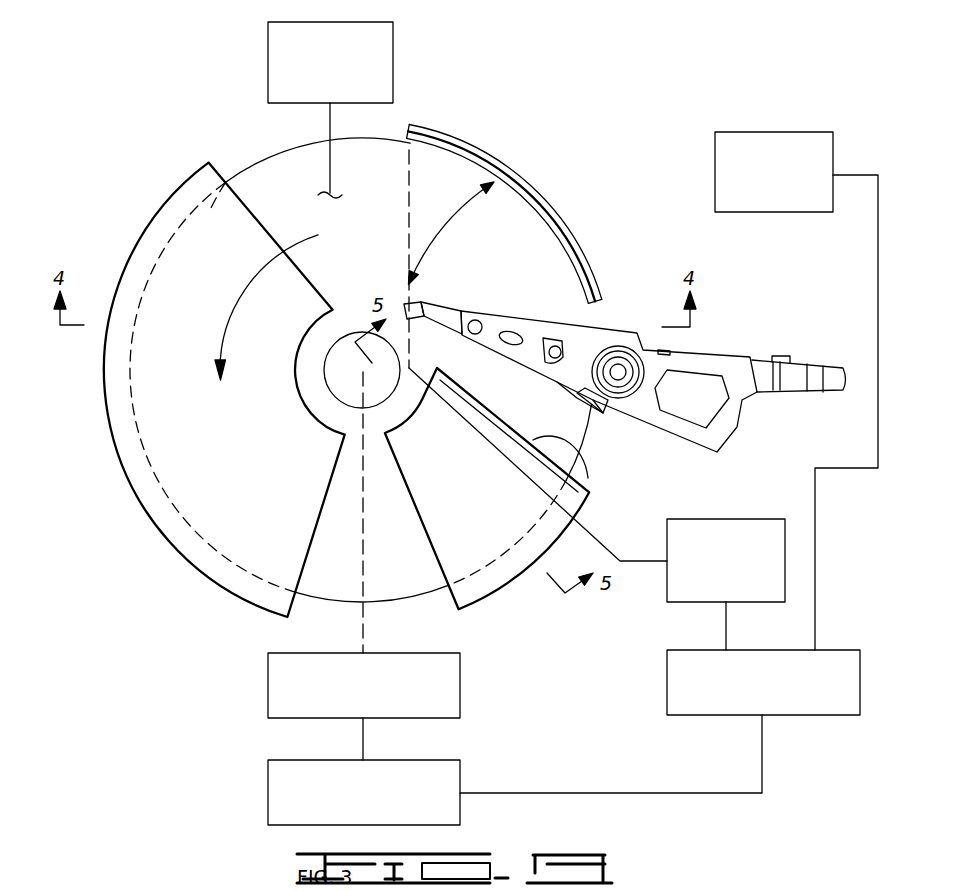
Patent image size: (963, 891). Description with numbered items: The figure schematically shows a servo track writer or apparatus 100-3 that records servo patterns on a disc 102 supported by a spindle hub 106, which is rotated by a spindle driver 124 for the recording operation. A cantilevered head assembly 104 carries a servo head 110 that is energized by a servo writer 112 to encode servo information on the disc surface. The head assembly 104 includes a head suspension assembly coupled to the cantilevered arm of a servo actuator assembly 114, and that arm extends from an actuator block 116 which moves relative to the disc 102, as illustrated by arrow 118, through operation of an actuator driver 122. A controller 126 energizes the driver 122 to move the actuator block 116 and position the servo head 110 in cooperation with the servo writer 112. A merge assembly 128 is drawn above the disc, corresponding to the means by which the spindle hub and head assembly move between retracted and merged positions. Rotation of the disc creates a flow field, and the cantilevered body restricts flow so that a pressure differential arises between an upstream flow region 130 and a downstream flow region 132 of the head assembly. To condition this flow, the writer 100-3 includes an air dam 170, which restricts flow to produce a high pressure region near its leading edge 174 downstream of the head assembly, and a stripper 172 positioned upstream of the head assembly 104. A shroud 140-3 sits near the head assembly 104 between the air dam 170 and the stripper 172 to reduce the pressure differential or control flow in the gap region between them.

The servo track writer 100-3 is at (593, 239).
The disc 102 is at (278, 152).
The cantilevered head assembly 104 is at (487, 313).
The spindle hub 106 is at (268, 682).
The servo head 110 is at (407, 306).
The servo writer 112 is at (725, 519).
The servo actuator assembly 114 is at (617, 328).
The actuator block 116 is at (567, 422).
The arrow 118 is at (440, 143).
The actuator driver 122 is at (783, 132).
The spindle driver 124 is at (268, 785).
The controller 126 is at (667, 685).
The merge assembly 128 is at (262, 42).
The upstream flow region 130 is at (576, 441).
The downstream flow region 132 is at (518, 243).
The shroud 140-3 is at (427, 118).
The air dam 170 is at (180, 190).
The stripper 172 is at (584, 459).
The leading edge 174 is at (250, 178).